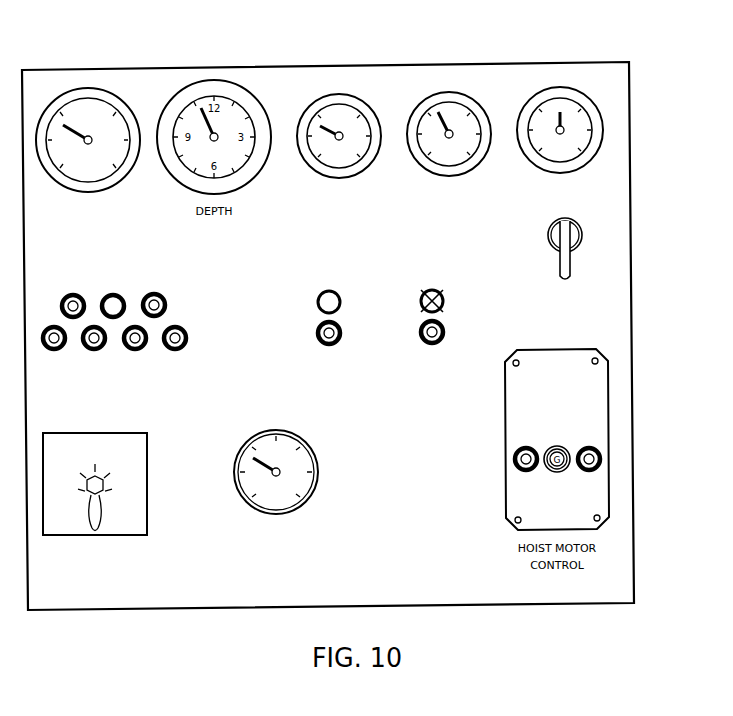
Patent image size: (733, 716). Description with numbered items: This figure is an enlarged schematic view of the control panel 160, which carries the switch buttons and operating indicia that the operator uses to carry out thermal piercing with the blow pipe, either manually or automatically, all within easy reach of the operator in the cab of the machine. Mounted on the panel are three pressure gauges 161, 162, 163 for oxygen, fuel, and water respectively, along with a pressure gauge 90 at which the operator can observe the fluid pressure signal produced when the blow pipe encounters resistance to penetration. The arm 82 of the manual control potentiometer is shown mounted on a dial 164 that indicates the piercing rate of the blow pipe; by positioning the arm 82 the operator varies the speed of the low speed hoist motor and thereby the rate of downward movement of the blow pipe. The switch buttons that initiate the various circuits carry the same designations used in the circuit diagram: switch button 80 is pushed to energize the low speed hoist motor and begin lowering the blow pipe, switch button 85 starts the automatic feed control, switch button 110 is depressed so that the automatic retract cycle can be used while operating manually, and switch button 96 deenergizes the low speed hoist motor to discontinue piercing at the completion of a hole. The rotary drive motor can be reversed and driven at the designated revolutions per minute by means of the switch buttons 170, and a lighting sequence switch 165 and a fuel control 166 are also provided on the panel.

The control panel 160 is at (633, 58).
The pressure gauge 90 is at (108, 89).
The pressure gauge 161 is at (313, 97).
The pressure gauge 163 is at (428, 97).
The pressure gauge 162 is at (542, 91).
The fuel control 166 is at (572, 262).
The switch buttons 170 is at (60, 328).
The switch button 110 is at (343, 332).
The switch button 85 is at (447, 330).
The lighting sequence switch 165 is at (146, 433).
The dial 164 is at (295, 465).
The arm 82 is at (284, 461).
The switch button 96 is at (513, 459).
The switch button 80 is at (601, 456).